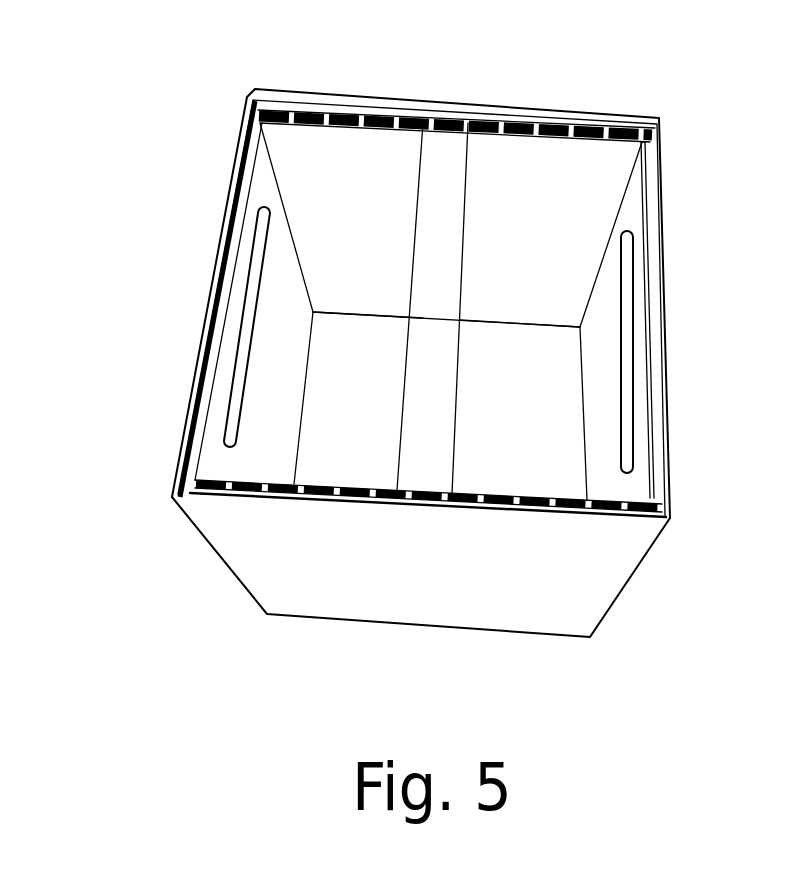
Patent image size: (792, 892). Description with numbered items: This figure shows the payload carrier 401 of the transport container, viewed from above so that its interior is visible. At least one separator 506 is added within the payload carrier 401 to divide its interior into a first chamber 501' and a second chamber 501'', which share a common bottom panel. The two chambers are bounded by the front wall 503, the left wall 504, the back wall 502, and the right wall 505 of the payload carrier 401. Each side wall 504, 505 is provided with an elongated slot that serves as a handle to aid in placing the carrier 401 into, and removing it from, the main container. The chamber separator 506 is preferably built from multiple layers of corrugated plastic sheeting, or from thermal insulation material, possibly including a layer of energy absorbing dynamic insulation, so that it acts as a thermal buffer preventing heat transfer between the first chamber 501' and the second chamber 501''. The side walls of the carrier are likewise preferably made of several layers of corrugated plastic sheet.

The payload carrier 401 is at (409, 45).
The first chamber 501' is at (368, 353).
The second chamber 501'' is at (520, 359).
The back wall 502 is at (507, 222).
The front wall 503 is at (397, 594).
The left wall 504 is at (237, 466).
The right wall 505 is at (613, 485).
The separator 506 is at (432, 447).